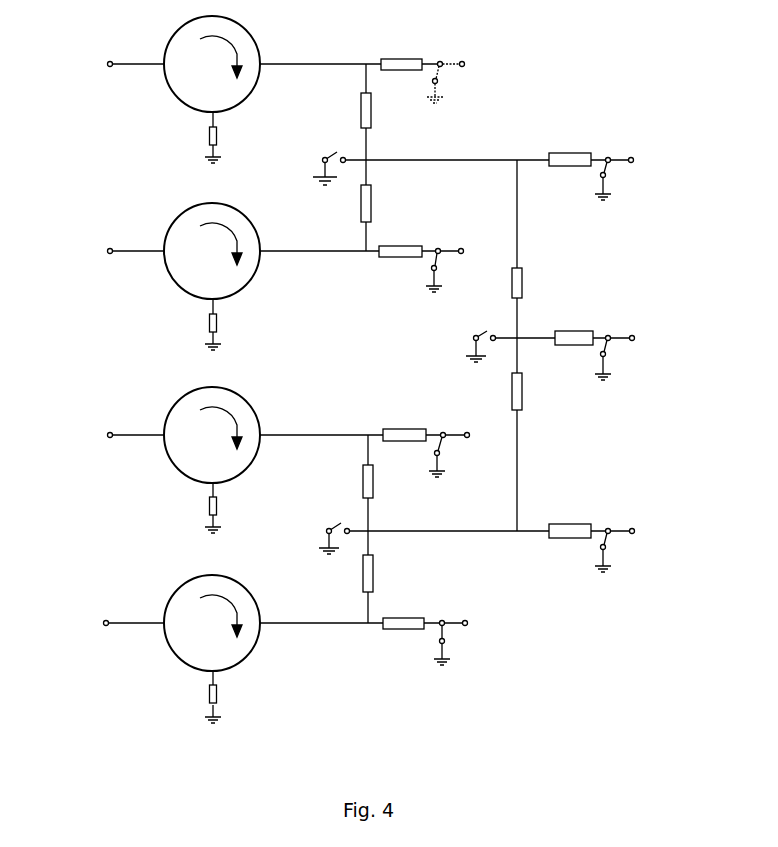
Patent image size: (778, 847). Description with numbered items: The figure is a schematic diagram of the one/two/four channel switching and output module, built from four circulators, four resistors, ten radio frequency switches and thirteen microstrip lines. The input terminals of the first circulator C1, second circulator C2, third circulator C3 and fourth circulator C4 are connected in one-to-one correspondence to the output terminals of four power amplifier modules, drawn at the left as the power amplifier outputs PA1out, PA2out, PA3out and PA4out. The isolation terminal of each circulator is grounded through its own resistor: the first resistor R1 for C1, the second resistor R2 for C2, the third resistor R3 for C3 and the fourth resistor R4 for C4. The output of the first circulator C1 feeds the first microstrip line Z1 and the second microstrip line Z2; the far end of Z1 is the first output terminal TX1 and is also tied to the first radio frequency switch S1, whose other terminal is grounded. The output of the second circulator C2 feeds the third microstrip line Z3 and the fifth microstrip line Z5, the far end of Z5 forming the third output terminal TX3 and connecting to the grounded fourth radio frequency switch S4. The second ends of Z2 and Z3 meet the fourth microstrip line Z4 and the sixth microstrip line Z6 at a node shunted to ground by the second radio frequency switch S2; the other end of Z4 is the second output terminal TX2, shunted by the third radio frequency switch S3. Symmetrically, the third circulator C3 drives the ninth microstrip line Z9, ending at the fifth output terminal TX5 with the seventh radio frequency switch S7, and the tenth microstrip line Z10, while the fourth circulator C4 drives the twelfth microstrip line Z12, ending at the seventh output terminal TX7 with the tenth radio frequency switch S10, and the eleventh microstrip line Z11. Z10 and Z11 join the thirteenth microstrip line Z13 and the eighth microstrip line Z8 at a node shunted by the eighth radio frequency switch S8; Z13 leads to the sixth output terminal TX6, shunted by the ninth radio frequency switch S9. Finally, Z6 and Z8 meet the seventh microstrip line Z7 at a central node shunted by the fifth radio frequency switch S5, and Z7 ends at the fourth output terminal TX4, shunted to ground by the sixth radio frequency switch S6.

The first circulator C1 is at (212, 64).
The second circulator C2 is at (212, 251).
The third circulator C3 is at (212, 435).
The fourth circulator C4 is at (212, 623).
The first resistor R1 is at (201, 137).
The second resistor R2 is at (201, 324).
The third resistor R3 is at (201, 508).
The fourth resistor R4 is at (201, 697).
The first microstrip line Z1 is at (401, 55).
The second microstrip line Z2 is at (376, 110).
The third microstrip line Z3 is at (377, 203).
The fourth microstrip line Z4 is at (570, 151).
The fifth microstrip line Z5 is at (400, 266).
The sixth microstrip line Z6 is at (529, 283).
The seventh microstrip line Z7 is at (574, 329).
The eighth microstrip line Z8 is at (529, 391).
The ninth microstrip line Z9 is at (404, 425).
The tenth microstrip line Z10 is at (382, 481).
The eleventh microstrip line Z11 is at (382, 573).
The twelfth microstrip line Z12 is at (403, 635).
The thirteenth microstrip line Z13 is at (570, 521).
The first radio frequency switch S1 is at (443, 74).
The second radio frequency switch S2 is at (326, 168).
The third radio frequency switch S3 is at (612, 165).
The fourth radio frequency switch S4 is at (442, 262).
The fifth radio frequency switch S5 is at (469, 346).
The sixth radio frequency switch S6 is at (612, 349).
The seventh radio frequency switch S7 is at (447, 446).
The eighth radio frequency switch S8 is at (323, 538).
The ninth radio frequency switch S9 is at (612, 541).
The tenth radio frequency switch S10 is at (448, 633).
The first output terminal TX1 is at (489, 64).
The second output terminal TX2 is at (655, 160).
The third output terminal TX3 is at (479, 251).
The fourth output terminal TX4 is at (653, 338).
The fifth output terminal TX5 is at (486, 435).
The sixth output terminal TX6 is at (650, 531).
The seventh output terminal TX7 is at (485, 623).
The power amplifier output PA1out is at (100, 64).
The power amplifier output PA2out is at (100, 251).
The power amplifier output PA3out is at (100, 435).
The power amplifier output PA4out is at (97, 623).